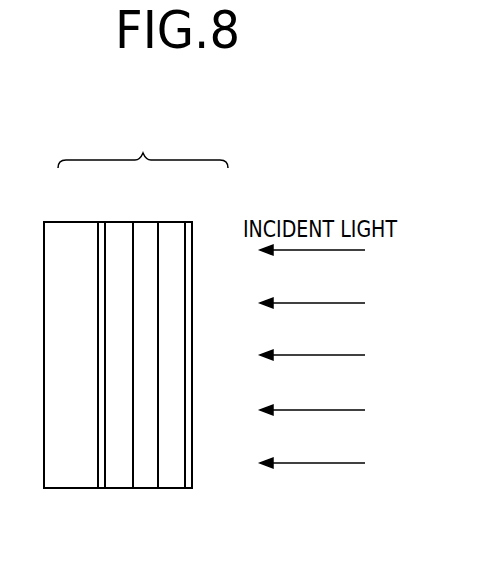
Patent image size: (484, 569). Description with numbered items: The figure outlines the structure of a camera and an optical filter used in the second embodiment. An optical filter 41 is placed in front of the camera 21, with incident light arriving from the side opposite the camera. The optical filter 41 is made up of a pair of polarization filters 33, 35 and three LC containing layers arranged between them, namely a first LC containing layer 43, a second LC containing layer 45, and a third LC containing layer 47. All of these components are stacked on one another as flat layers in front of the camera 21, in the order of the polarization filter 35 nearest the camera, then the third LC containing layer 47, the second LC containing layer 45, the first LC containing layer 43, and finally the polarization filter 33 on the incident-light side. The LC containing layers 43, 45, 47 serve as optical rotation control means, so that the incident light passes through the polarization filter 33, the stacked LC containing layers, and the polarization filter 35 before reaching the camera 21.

The camera 21 is at (67, 222).
The polarization filter 35 is at (102, 222).
The third LC containing layer 47 is at (117, 222).
The second LC containing layer 45 is at (147, 222).
The first LC containing layer 43 is at (170, 222).
The polarization filter 33 is at (190, 222).
The optical filter 41 is at (143, 146).